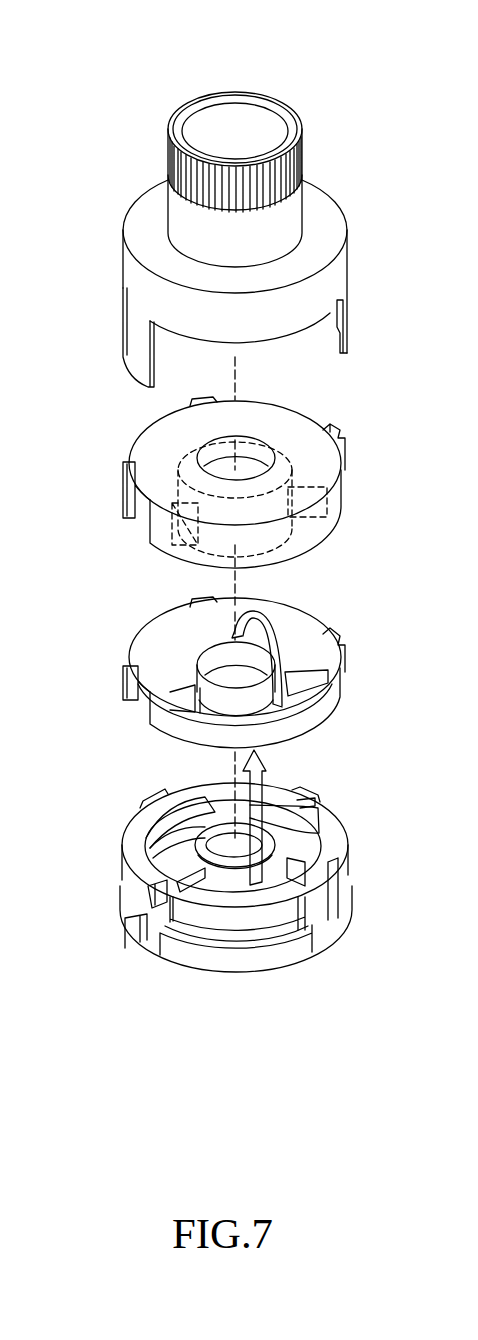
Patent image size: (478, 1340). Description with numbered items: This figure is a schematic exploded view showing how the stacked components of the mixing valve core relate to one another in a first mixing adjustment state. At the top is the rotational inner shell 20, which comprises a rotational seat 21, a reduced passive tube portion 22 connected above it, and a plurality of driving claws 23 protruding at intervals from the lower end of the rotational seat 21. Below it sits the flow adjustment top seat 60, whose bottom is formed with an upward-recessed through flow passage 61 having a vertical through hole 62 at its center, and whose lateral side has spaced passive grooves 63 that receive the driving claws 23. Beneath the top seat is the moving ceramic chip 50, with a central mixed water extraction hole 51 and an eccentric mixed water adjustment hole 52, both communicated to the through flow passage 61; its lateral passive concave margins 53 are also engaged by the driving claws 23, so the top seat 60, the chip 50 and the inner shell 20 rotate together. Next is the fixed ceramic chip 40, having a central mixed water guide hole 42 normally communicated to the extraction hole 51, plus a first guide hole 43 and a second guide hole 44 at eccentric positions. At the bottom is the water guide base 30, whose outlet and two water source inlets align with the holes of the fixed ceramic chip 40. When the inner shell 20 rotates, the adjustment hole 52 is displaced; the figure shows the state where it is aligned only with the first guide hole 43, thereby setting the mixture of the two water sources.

The rotational inner shell 20 is at (205, 215).
The rotational seat 21 is at (138, 287).
The reduced passive tube portion 22 is at (300, 157).
The driving claws 23 is at (135, 334).
The water guide base 30 is at (121, 934).
The fixed ceramic chip 40 is at (246, 836).
The mixed water guide hole 42 is at (202, 838).
The first guide hole 43 is at (300, 858).
The second guide hole 44 is at (156, 835).
The moving ceramic chip 50 is at (241, 646).
The mixed water extraction hole 51 is at (207, 657).
The mixed water adjustment hole 52 is at (300, 664).
The passive concave margins 53 is at (342, 665).
The flow adjustment top seat 60 is at (242, 460).
The through flow passage 61 is at (346, 477).
The vertical through hole 62 is at (252, 448).
The passive grooves 63 is at (340, 454).